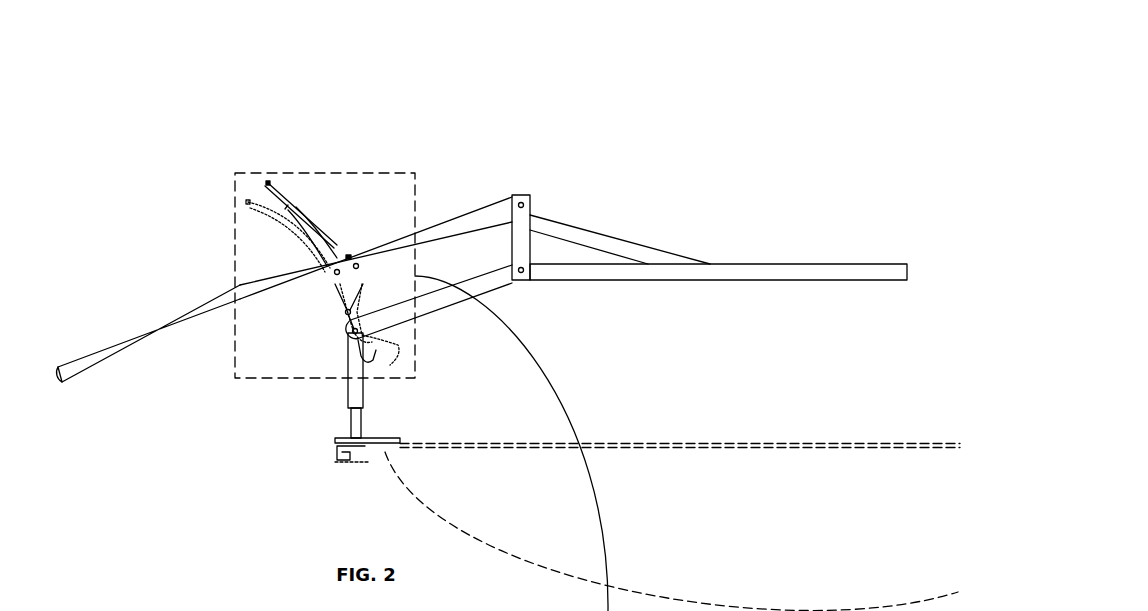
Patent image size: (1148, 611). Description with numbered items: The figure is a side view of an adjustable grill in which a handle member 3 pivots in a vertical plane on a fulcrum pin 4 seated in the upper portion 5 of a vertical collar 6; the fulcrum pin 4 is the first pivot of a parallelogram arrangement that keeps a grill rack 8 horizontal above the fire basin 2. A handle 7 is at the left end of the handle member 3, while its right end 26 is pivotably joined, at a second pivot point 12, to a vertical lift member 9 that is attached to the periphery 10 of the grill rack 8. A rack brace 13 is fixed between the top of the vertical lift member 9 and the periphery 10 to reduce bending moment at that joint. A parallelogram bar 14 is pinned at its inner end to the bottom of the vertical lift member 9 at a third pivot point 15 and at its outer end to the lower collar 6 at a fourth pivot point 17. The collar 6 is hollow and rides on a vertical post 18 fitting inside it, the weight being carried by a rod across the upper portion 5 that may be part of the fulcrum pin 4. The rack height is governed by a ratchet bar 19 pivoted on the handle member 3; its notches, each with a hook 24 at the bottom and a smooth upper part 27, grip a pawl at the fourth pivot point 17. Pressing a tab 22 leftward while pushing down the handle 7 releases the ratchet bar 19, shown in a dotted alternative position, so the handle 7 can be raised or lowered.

The fire basin 2 is at (706, 532).
The handle member 3 is at (194, 262).
The fulcrum pin 4 is at (357, 264).
The upper portion 5 is at (351, 309).
The vertical collar 6 is at (350, 257).
The handle 7 is at (85, 363).
The grill rack 8 is at (750, 216).
The vertical lift member 9 is at (518, 242).
The periphery 10 is at (617, 272).
The second pivot point 12 is at (521, 203).
The rack brace 13 is at (582, 238).
The parallelogram bar 14 is at (442, 300).
The third pivot point 15 is at (532, 280).
The fourth pivot point 17 is at (351, 332).
The vertical post 18 is at (356, 419).
The ratchet bar 19 is at (345, 255).
The tab 22 is at (268, 183).
The hook 24 is at (365, 363).
The right end 26 is at (453, 233).
The smooth upper part 27 is at (343, 318).